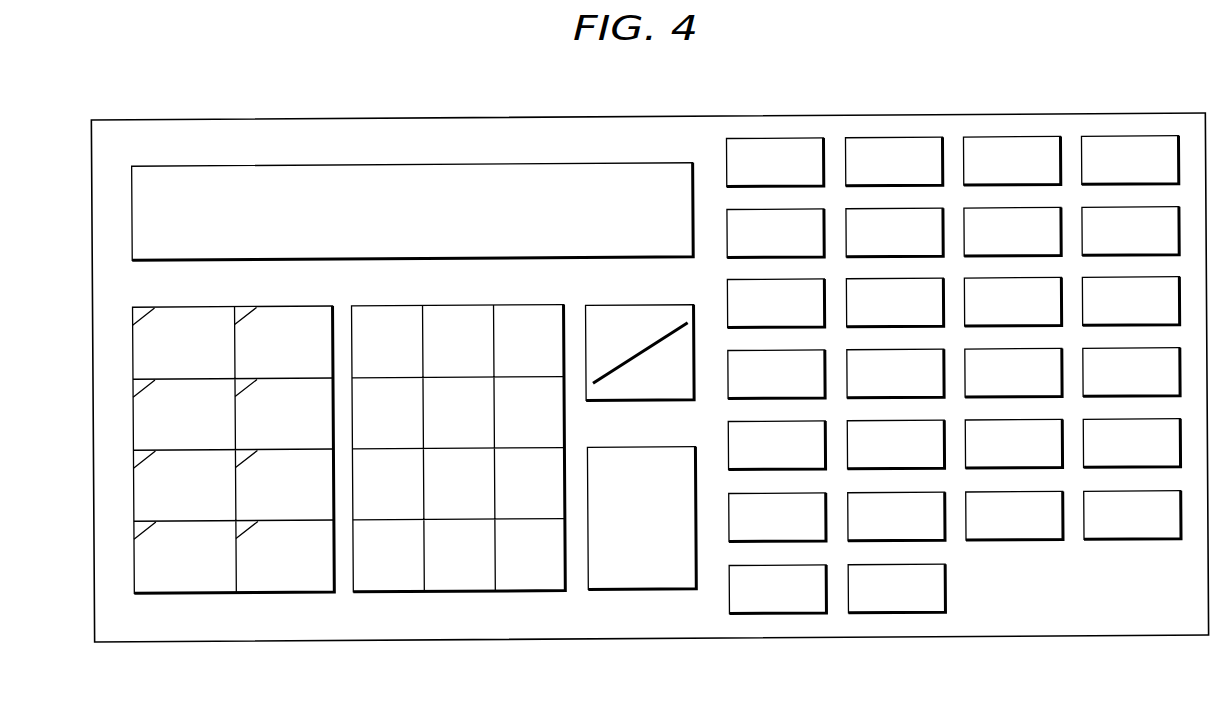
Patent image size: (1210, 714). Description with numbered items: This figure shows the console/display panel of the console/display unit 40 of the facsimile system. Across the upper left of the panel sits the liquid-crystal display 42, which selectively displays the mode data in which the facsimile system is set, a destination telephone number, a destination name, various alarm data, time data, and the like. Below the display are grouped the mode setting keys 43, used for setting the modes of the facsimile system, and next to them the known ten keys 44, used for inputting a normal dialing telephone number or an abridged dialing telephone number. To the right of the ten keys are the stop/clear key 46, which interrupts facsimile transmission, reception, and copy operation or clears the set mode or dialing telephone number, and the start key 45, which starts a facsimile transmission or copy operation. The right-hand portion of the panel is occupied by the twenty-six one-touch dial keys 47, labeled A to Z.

The console/display unit 40 is at (1143, 116).
The liquid-crystal display 42 is at (643, 162).
The mode setting keys 43 is at (333, 595).
The ten keys 44 is at (564, 595).
The start key 45 is at (657, 590).
The stop/clear key 46 is at (648, 304).
The one-touch dial keys 47 is at (1182, 644).